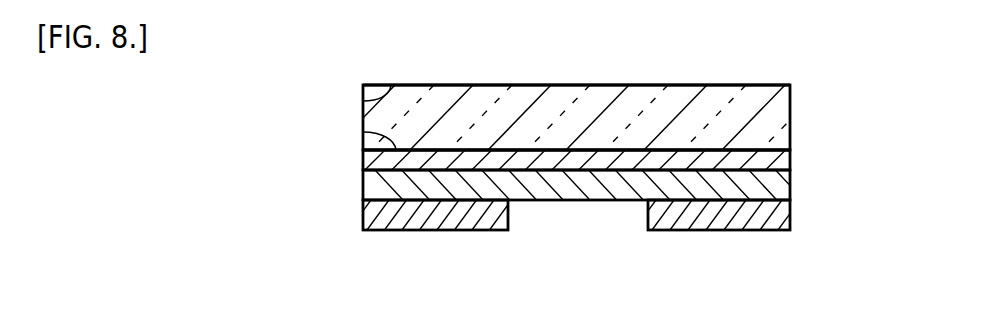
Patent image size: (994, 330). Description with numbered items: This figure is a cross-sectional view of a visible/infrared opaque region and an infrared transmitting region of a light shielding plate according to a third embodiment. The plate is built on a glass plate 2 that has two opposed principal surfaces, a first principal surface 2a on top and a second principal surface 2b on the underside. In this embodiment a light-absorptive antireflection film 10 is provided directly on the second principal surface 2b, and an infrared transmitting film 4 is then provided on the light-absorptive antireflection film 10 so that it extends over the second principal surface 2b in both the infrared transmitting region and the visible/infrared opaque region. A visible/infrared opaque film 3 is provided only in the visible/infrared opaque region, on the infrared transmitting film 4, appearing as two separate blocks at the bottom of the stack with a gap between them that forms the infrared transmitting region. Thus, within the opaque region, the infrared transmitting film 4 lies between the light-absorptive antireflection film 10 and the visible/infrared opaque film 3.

The glass plate 2 is at (790, 121).
The first principal surface 2a is at (363, 101).
The second principal surface 2b is at (363, 132).
The light-absorptive antireflection film 10 is at (790, 160).
The infrared transmitting film 4 is at (578, 185).
The visible/infrared opaque film 3 is at (435, 222).